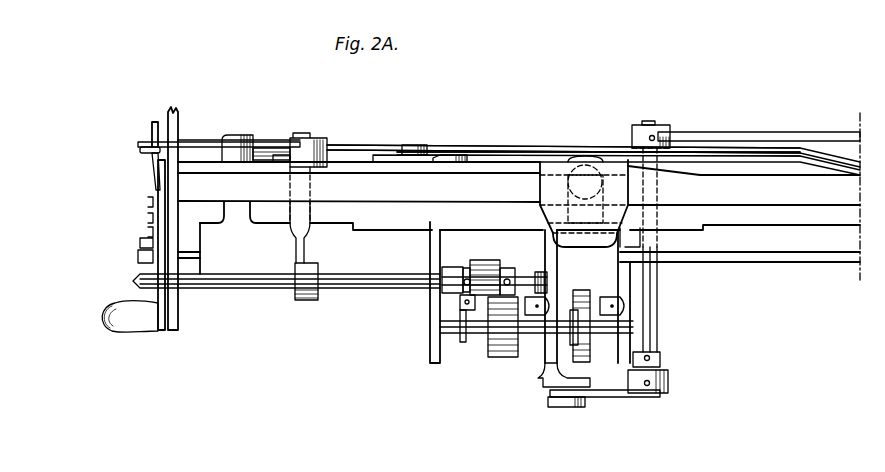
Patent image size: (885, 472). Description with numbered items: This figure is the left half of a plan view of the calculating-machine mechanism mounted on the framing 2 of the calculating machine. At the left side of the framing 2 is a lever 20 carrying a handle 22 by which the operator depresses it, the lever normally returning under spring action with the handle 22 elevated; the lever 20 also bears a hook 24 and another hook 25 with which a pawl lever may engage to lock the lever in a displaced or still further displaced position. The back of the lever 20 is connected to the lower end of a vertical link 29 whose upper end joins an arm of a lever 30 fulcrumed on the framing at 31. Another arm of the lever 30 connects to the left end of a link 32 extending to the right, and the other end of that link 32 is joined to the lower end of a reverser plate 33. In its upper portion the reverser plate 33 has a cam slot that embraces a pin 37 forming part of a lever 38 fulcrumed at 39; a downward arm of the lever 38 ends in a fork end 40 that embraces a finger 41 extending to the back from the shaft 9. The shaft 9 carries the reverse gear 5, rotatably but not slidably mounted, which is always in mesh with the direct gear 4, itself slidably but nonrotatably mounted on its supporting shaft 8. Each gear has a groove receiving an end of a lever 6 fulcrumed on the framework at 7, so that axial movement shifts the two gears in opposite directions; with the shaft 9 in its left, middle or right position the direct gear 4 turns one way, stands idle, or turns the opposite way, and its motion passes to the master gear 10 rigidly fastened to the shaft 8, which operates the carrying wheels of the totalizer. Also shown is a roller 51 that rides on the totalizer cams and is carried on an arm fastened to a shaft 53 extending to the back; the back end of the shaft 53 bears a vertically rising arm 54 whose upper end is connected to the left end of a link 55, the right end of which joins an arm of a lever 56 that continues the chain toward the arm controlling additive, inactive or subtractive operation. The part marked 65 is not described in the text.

The framing of the calculating machine 2 is at (487, 190).
The direct gear 4 is at (507, 340).
The reverse gear 5 is at (480, 272).
The lever 6 is at (505, 283).
The fulcrum 7 is at (458, 302).
The supporting shaft 8 is at (461, 322).
The shaft 9 is at (362, 285).
The master gear 10 is at (582, 292).
The lever 20 is at (156, 186).
The handle 22 is at (102, 312).
The hook 24 is at (138, 259).
The hook 25 is at (140, 243).
The link 29 is at (140, 149).
The lever 30 is at (202, 140).
The fulcrum 31 is at (233, 135).
The link 32 is at (268, 150).
The reverser plate 33 is at (453, 155).
The pin 37 is at (415, 147).
The lever 38 is at (340, 145).
The fulcrum 39 is at (308, 135).
The fork end 40 is at (278, 160).
The finger 41 is at (300, 234).
The roller 51 is at (573, 407).
The shaft 53 is at (657, 296).
The arm 54 is at (666, 125).
The link 55 is at (762, 132).
The lever 56 is at (617, 393).
The bar 65 is at (527, 152).